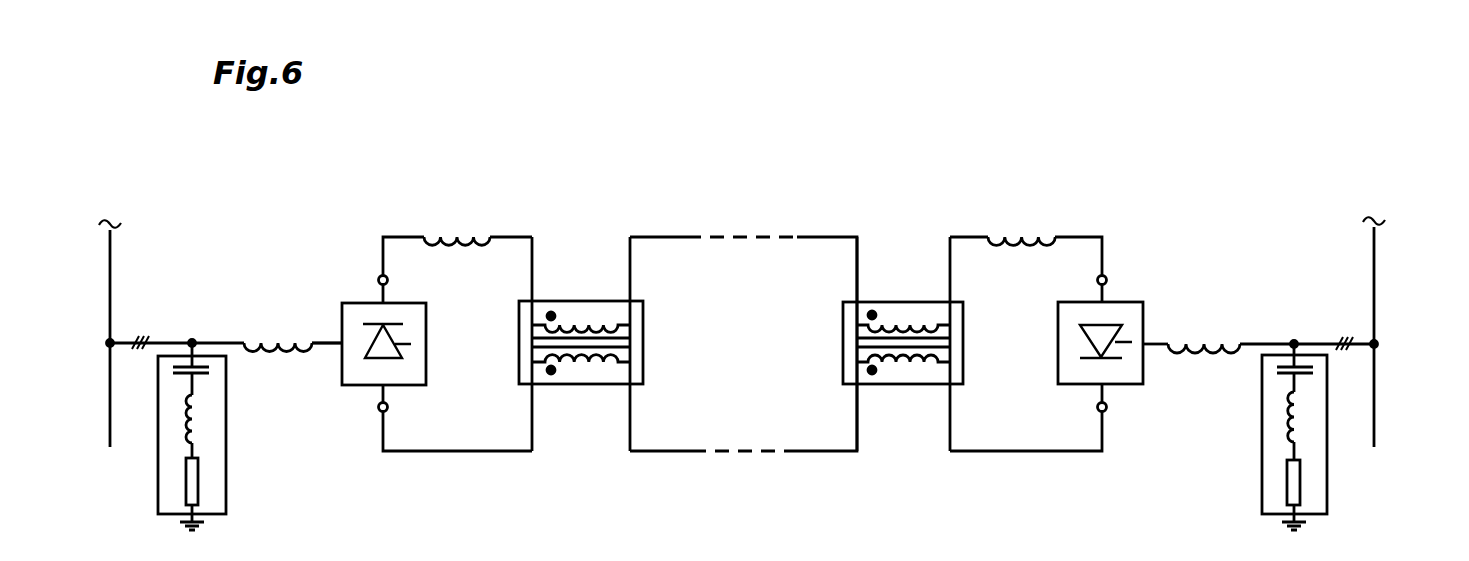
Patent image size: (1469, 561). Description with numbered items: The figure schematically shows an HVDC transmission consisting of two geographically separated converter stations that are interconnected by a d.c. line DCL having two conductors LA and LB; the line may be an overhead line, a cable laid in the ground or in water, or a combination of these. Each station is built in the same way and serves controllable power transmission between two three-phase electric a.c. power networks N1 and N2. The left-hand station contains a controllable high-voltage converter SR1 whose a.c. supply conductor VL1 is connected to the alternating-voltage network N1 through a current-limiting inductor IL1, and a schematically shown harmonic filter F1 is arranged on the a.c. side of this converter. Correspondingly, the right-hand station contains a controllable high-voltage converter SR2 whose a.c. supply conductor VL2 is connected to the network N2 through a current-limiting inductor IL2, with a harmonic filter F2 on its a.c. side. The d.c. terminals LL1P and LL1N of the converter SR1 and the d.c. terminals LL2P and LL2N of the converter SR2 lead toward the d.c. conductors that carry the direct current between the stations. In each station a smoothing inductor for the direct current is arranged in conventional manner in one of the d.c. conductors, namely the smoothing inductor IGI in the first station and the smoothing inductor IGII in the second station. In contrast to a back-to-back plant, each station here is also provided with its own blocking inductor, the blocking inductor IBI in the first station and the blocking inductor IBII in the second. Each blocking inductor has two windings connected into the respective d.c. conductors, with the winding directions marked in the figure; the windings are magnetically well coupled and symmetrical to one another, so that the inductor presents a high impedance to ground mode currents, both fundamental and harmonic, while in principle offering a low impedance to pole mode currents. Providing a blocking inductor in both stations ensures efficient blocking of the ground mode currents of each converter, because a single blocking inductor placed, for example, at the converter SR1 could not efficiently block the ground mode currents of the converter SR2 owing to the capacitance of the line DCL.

The three-phase electric a.c. power network N1 is at (110, 410).
The three-phase electric a.c. power network N2 is at (1376, 280).
The harmonic filter F1 is at (226, 490).
The harmonic filter F2 is at (1327, 487).
The current-limiting inductor IL1 is at (280, 343).
The current-limiting inductor IL2 is at (1204, 350).
The a.c. supply conductor VL1 is at (330, 345).
The a.c. supply conductor VL2 is at (1150, 344).
The d.c. terminal LL1P is at (379, 277).
The d.c. terminal LL1N is at (380, 410).
The d.c. terminal LL2N is at (1106, 277).
The d.c. terminal LL2P is at (1106, 410).
The controllable high-voltage converter SR1 is at (408, 385).
The controllable high-voltage converter SR2 is at (1078, 385).
The smoothing inductor IGI is at (456, 237).
The smoothing inductor IGII is at (1022, 237).
The blocking inductor IBI is at (580, 301).
The blocking inductor IBII is at (902, 302).
The conductor LA is at (728, 237).
The conductor LB is at (745, 452).
The line DCL is at (743, 347).